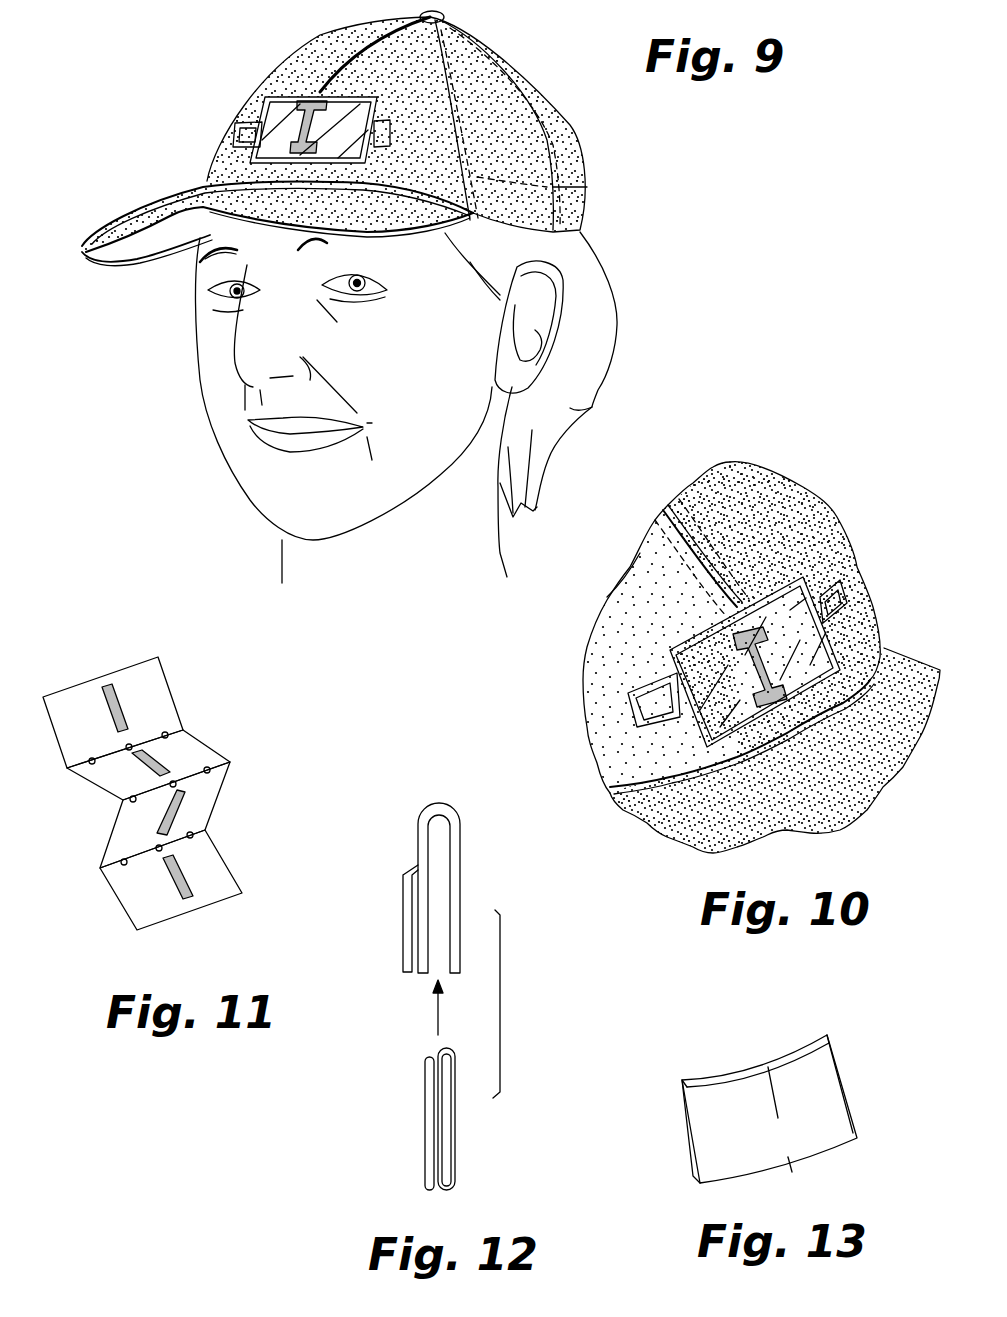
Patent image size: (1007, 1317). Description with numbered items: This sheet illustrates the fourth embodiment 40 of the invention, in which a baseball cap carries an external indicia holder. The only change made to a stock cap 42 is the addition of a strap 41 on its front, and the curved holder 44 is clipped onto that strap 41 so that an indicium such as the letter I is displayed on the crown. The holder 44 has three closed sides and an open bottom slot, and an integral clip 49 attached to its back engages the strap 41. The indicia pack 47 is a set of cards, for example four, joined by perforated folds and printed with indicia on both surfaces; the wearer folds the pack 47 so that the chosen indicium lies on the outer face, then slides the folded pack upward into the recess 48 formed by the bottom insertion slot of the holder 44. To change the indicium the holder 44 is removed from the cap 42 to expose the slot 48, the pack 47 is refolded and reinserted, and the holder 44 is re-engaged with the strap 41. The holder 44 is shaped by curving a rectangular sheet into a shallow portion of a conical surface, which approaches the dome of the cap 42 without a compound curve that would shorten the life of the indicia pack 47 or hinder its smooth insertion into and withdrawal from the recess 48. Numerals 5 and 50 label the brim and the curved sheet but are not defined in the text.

In FIG. 9, the brim 5 is at (147, 200).
In FIG. 10, the brim 5 is at (905, 672).
In FIG. 9, the fourth embodiment 40 is at (391, 138).
In FIG. 10, the fourth embodiment 40 is at (761, 620).
In FIG. 9, the strap 41 is at (240, 133).
In FIG. 10, the strap 41 is at (653, 707).
In FIG. 9, the cap 42 is at (550, 107).
In FIG. 10, the cap 42 is at (800, 476).
In FIG. 9, the holder 44 is at (260, 93).
In FIG. 10, the holder 44 is at (690, 643).
In FIG. 12, the holder 44 is at (433, 865).
In FIG. 11, the indicia pack 47 is at (222, 732).
In FIG. 12, the indicia pack 47 is at (413, 1102).
In FIG. 12, the recess 48 is at (438, 839).
In FIG. 12, the integral clip 49 is at (403, 917).
In FIG. 13, the display card 50 is at (855, 1082).